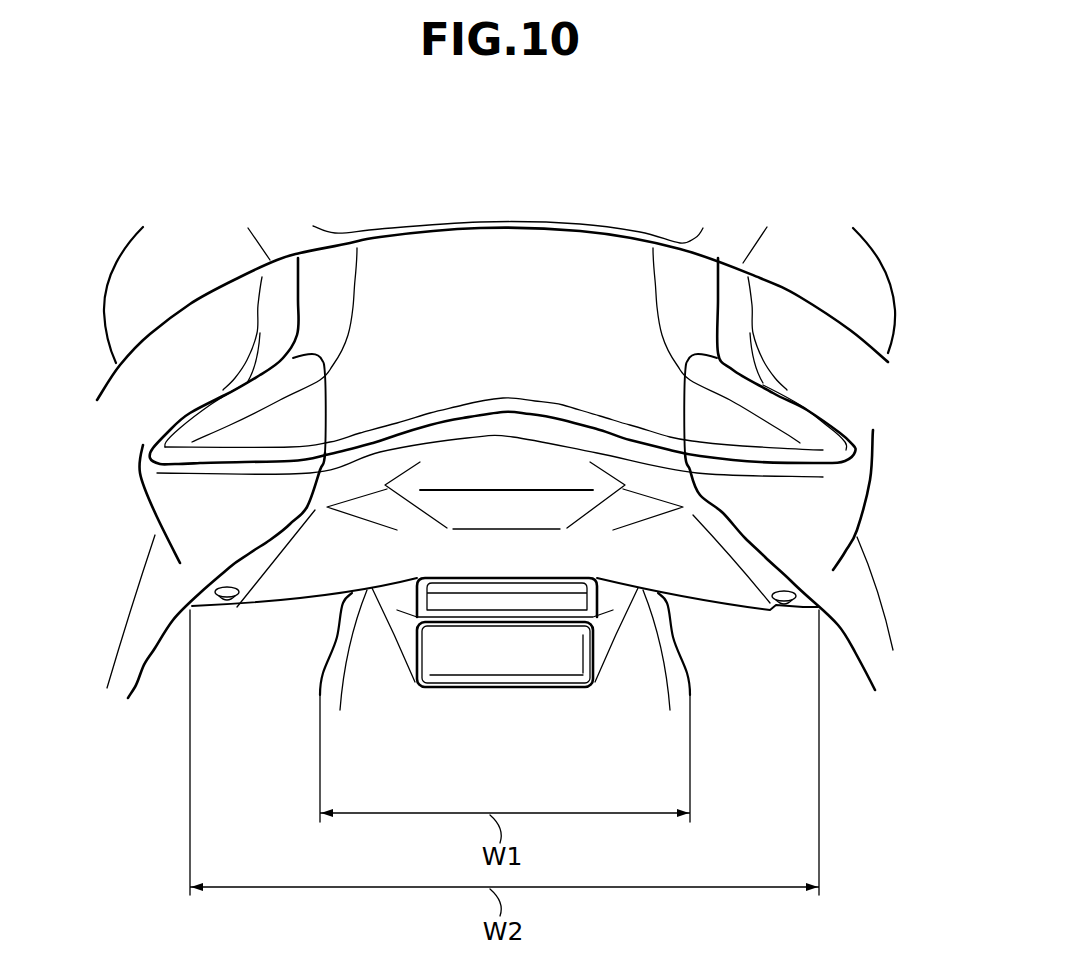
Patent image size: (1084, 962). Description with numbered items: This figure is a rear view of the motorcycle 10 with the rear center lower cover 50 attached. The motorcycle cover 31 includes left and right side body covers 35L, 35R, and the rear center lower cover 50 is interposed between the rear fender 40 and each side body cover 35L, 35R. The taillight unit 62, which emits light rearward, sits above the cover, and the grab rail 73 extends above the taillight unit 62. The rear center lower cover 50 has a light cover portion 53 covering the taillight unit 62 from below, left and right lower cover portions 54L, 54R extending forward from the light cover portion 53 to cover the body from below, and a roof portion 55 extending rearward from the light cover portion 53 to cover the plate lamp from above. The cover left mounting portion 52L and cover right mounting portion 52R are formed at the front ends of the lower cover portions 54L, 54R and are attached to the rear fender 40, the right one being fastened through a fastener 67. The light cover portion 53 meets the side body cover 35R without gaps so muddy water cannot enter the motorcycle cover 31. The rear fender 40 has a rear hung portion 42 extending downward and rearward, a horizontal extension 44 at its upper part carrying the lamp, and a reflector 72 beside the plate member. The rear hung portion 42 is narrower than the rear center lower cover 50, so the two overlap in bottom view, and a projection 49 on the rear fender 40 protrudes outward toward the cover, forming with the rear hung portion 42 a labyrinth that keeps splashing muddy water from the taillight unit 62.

The vehicle front cowl assembly 10 is at (308, 150).
The motorcycle cover 31 is at (857, 412).
The left side body cover 35L is at (140, 398).
The right side body cover 35R is at (847, 380).
The rear fender 40 is at (684, 633).
The rear hung portion 42 is at (665, 660).
The horizontal extension 44 is at (412, 668).
The projection 49 is at (343, 598).
The rear center lower cover 50 is at (603, 478).
The cover left mounting portion 52L is at (220, 578).
The cover right mounting portion 52R is at (790, 573).
The light cover portion 53 is at (513, 452).
The left lower cover portion 54L is at (292, 583).
The right lower cover portion 54R is at (732, 593).
The roof portion 55 is at (518, 547).
The taillight unit 62 is at (500, 277).
The fastener 67 is at (233, 607).
The reflector 72 is at (482, 667).
The grab rail 73 is at (528, 217).